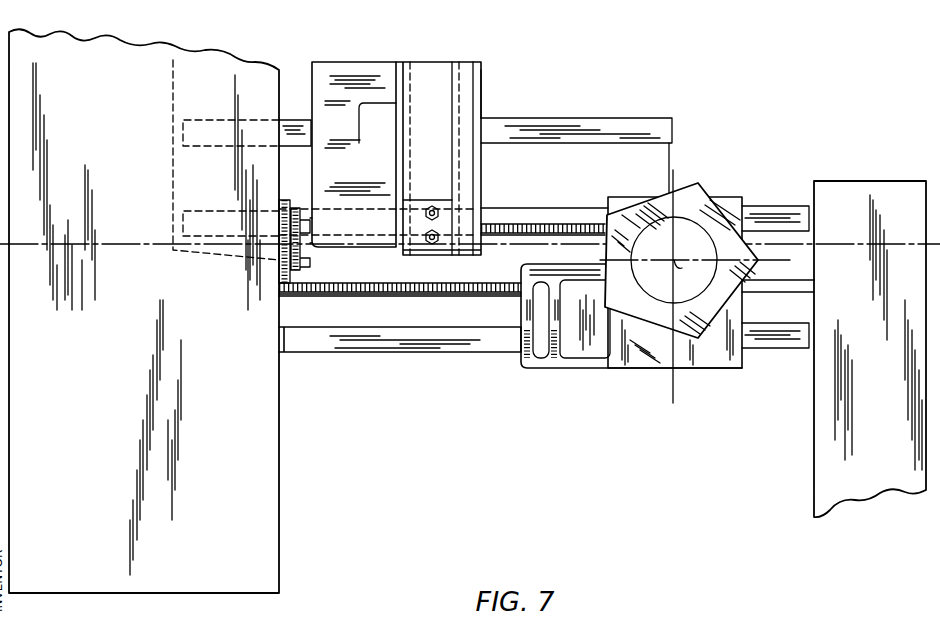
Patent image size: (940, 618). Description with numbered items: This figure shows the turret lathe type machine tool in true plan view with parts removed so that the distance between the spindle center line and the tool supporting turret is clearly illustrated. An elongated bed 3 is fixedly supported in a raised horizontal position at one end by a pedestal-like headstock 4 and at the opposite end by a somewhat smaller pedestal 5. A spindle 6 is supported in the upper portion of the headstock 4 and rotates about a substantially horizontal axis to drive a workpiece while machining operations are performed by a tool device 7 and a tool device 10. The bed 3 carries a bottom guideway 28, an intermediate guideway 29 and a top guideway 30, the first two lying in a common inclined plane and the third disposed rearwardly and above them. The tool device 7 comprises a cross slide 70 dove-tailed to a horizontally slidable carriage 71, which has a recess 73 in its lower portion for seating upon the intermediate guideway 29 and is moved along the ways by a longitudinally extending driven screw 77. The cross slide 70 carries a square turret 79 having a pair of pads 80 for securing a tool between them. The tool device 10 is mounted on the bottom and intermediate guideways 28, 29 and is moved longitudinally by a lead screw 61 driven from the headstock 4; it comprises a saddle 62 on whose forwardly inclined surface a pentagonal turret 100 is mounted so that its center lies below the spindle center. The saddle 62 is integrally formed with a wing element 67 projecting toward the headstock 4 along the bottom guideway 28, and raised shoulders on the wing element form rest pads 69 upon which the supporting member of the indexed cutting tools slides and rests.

The bed 3 is at (483, 358).
The headstock 4 is at (278, 461).
The pedestal 5 is at (824, 476).
The spindle 6 is at (300, 258).
The tool device 7 is at (491, 103).
The tool device 10 is at (736, 374).
The bottom guideway 28 is at (371, 352).
The intermediate guideway 29 is at (578, 210).
The top guideway 30 is at (590, 117).
The lead screw 61 is at (379, 276).
The saddle 62 is at (700, 368).
The wing element 67 is at (533, 368).
The rest pads 69 is at (558, 310).
The cross slide 70 is at (418, 66).
The carriage 71 is at (345, 66).
The recess 73 is at (382, 233).
The driven screw 77 is at (496, 224).
The square turret 79 is at (434, 256).
The pads 80 is at (420, 207).
The turret 100 is at (698, 188).